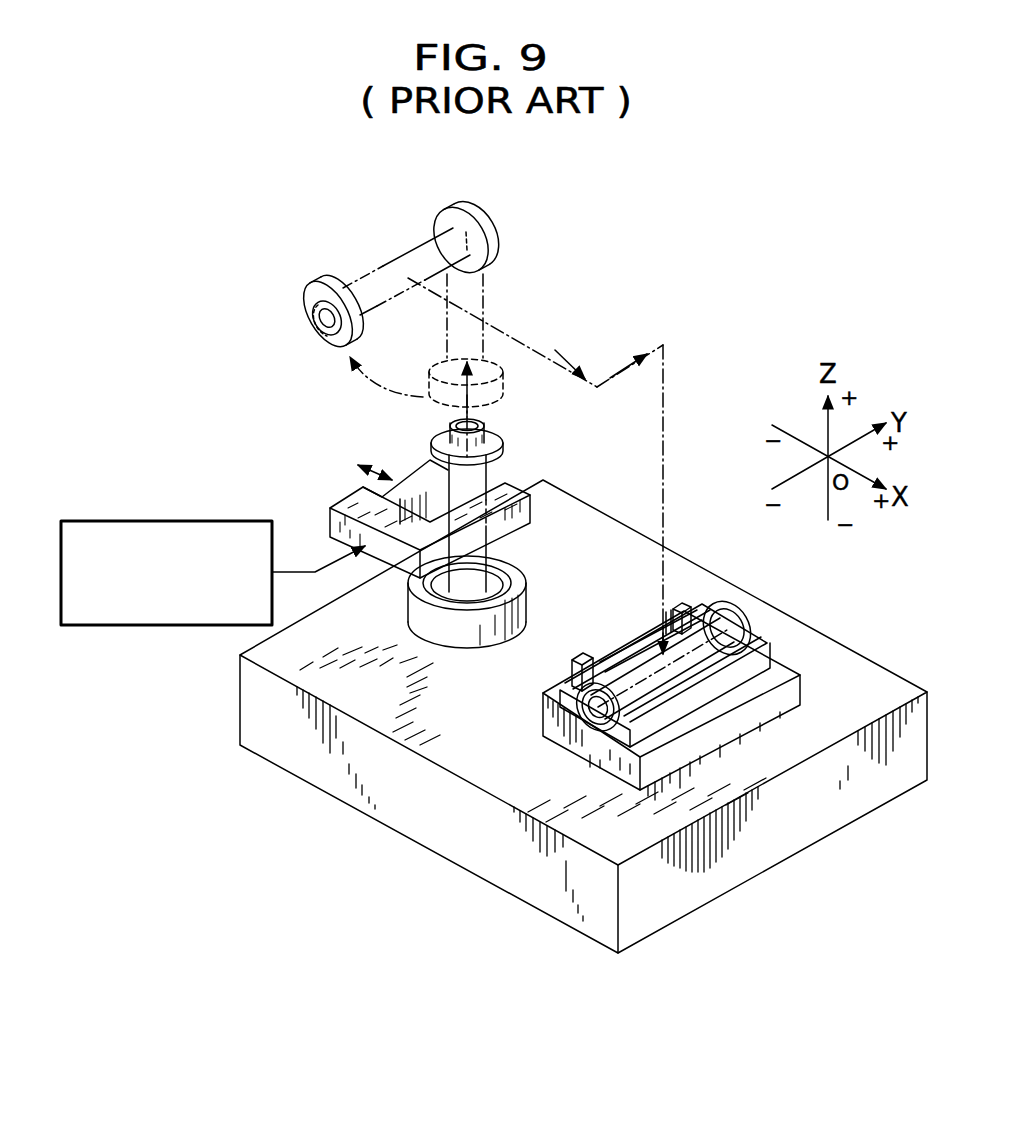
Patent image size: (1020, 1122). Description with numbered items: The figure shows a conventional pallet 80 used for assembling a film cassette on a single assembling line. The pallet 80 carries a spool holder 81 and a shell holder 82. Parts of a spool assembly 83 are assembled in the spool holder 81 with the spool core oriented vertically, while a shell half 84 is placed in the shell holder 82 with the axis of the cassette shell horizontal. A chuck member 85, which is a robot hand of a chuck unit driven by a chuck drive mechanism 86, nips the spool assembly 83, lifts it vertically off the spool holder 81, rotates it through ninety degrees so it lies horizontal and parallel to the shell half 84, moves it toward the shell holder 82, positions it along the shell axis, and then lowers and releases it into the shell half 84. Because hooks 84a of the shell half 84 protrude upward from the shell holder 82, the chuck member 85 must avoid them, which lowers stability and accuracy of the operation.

The pallet 80 is at (469, 878).
The spool holder 81 is at (480, 640).
The shell holder 82 is at (750, 718).
The spool assembly 83 is at (505, 446).
The shell half 84 is at (681, 688).
The hooks 84a is at (584, 658).
The chuck member 85 is at (352, 503).
The chuck drive mechanism 86 is at (165, 520).